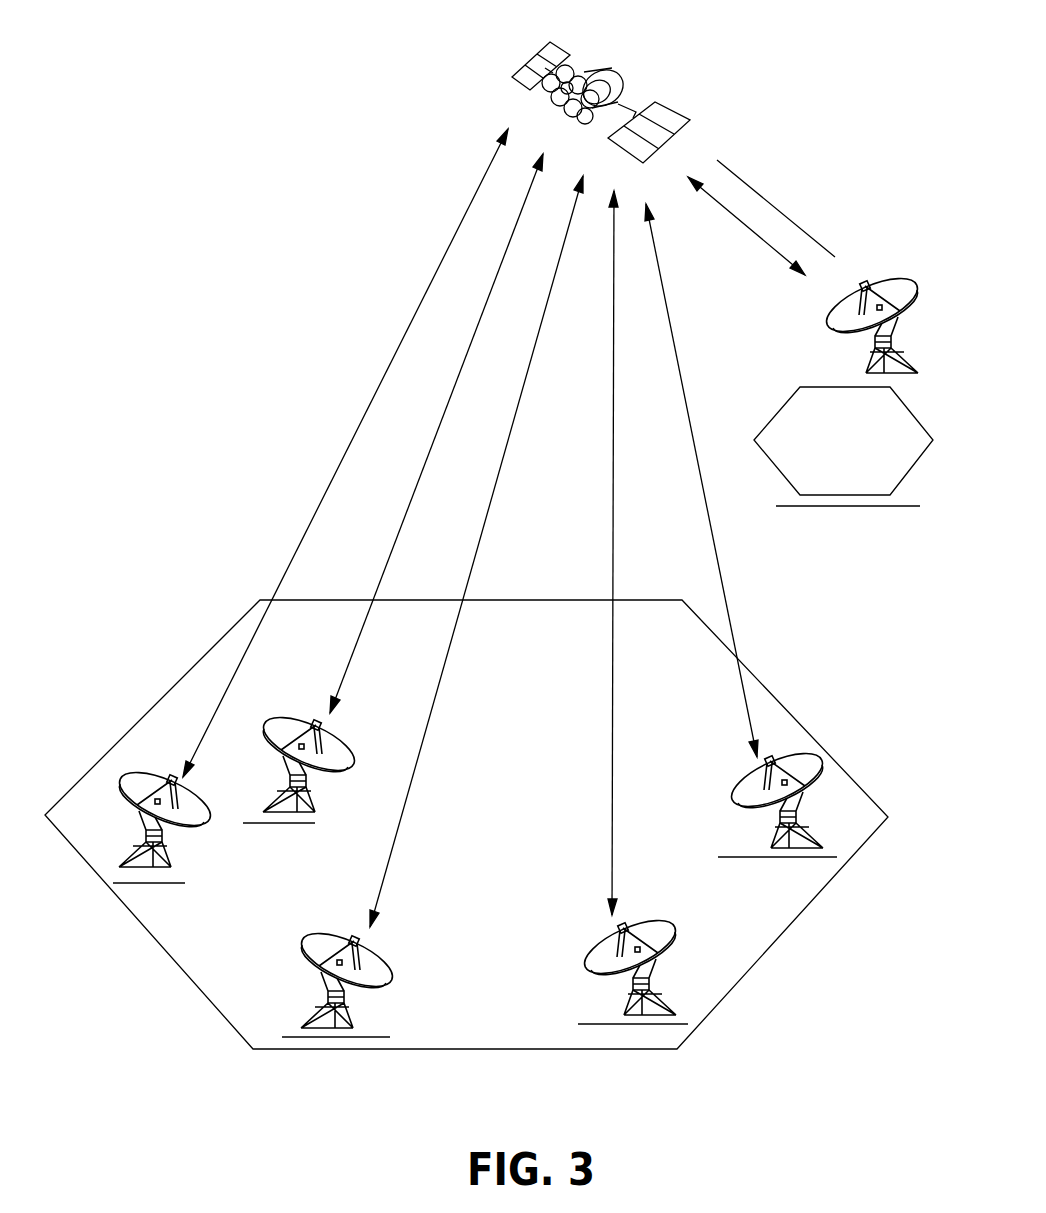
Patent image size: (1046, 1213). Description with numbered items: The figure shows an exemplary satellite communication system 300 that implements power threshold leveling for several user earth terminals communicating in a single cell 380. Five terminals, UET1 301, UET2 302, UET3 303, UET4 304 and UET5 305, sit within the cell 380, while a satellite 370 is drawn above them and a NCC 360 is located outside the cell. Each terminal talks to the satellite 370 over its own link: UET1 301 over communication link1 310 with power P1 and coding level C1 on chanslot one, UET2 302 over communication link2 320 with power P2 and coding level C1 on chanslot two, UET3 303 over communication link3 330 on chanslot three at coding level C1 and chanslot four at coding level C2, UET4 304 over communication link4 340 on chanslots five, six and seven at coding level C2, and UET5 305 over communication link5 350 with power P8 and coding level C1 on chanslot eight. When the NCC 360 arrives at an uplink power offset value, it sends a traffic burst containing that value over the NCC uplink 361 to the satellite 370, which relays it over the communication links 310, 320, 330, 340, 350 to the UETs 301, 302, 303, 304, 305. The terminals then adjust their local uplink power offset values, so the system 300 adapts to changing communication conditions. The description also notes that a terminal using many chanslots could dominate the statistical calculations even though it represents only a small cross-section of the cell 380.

The satellite communication system 300 is at (328, 178).
The UET1 301 is at (122, 780).
The UET2 302 is at (292, 715).
The UET3 303 is at (333, 930).
The UET4 304 is at (585, 935).
The UET5 305 is at (828, 758).
The communication link1 310 is at (300, 540).
The communication link2 320 is at (385, 560).
The communication link3 330 is at (465, 583).
The communication link4 340 is at (610, 530).
The communication link5 350 is at (716, 560).
The NCC 360 is at (880, 280).
The NCC uplink 361 is at (775, 200).
The satellite 370 is at (612, 82).
The cell 380 is at (768, 688).